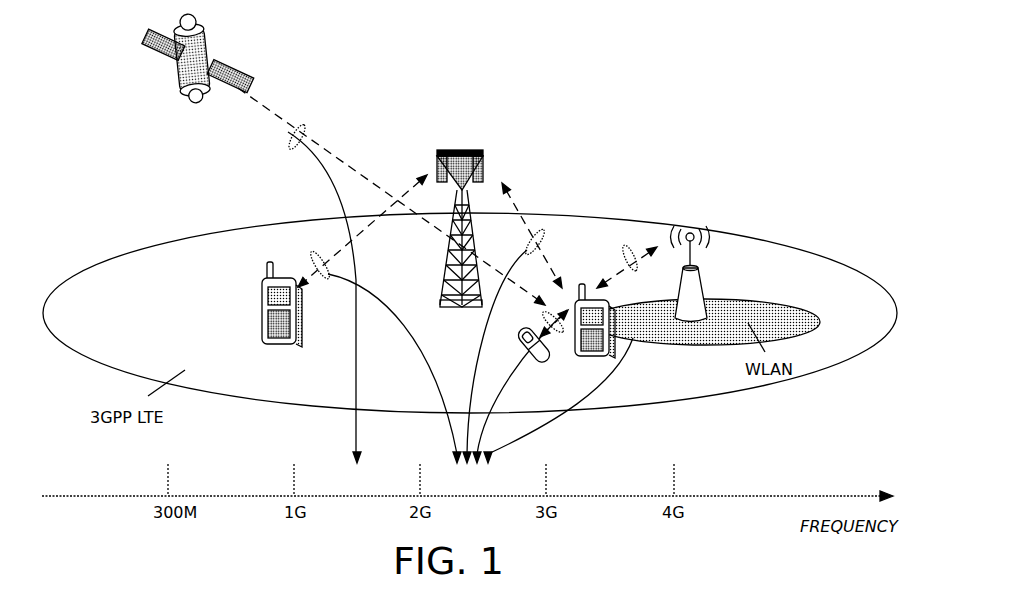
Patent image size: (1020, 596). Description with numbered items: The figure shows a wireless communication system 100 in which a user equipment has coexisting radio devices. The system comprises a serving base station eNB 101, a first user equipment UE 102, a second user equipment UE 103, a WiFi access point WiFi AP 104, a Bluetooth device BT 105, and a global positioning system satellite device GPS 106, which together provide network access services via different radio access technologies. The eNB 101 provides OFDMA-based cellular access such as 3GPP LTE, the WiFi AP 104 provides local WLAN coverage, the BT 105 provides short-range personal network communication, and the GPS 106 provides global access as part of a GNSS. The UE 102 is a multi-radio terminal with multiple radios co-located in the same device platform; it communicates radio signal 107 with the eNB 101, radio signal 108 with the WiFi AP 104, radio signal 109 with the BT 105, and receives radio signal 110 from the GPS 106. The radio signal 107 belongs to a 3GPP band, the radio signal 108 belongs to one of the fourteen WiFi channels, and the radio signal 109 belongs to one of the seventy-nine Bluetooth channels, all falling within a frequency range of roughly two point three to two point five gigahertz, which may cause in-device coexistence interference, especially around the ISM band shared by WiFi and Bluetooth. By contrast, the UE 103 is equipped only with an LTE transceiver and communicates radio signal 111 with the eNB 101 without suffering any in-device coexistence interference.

The wireless communication system 100 is at (838, 45).
The serving base station eNB 101 is at (462, 150).
The first user equipment UE 102 is at (600, 357).
The second user equipment UE 103 is at (287, 348).
The WiFi access point 104 is at (689, 233).
The Bluetooth device 105 is at (527, 352).
The global positioning system satellite device 106 is at (190, 98).
The radio signal 107 is at (540, 232).
The radio signal 108 is at (623, 255).
The radio signal 109 is at (547, 320).
The radio signal 110 is at (305, 121).
The radio signal 111 is at (310, 258).